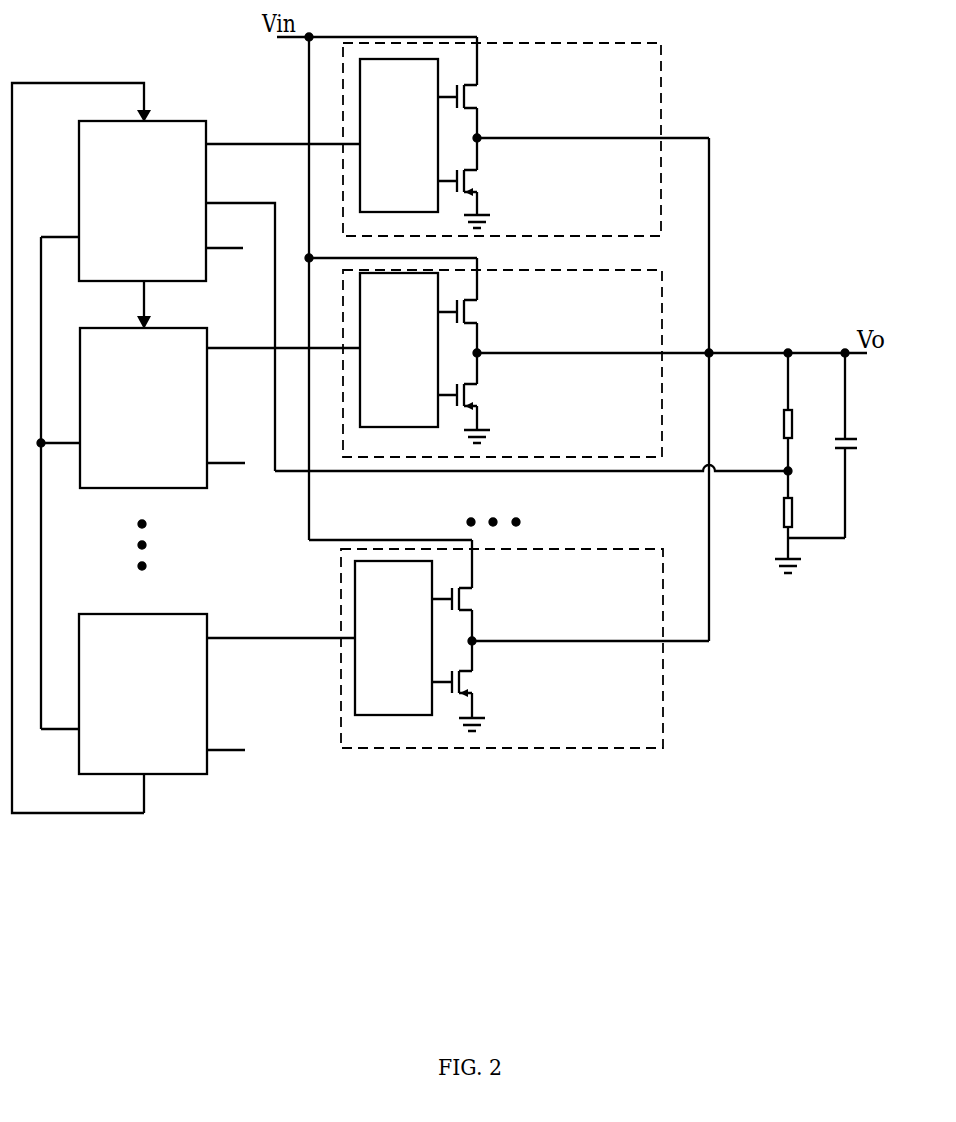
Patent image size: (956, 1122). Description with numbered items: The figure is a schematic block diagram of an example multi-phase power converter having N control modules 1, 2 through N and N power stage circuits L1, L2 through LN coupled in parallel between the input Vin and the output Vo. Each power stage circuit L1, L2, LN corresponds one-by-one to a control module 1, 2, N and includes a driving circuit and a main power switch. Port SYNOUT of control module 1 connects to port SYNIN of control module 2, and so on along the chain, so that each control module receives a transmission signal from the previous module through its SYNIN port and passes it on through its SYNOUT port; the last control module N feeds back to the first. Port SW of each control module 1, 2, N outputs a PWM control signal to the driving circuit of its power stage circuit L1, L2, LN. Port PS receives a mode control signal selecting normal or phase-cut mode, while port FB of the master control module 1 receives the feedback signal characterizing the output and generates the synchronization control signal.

The control module 1 is at (79, 165).
The control module 2 is at (80, 375).
The control module N is at (79, 657).
The power stage circuit L1 is at (661, 178).
The power stage circuit L2 is at (662, 410).
The power stage circuit LN is at (663, 668).